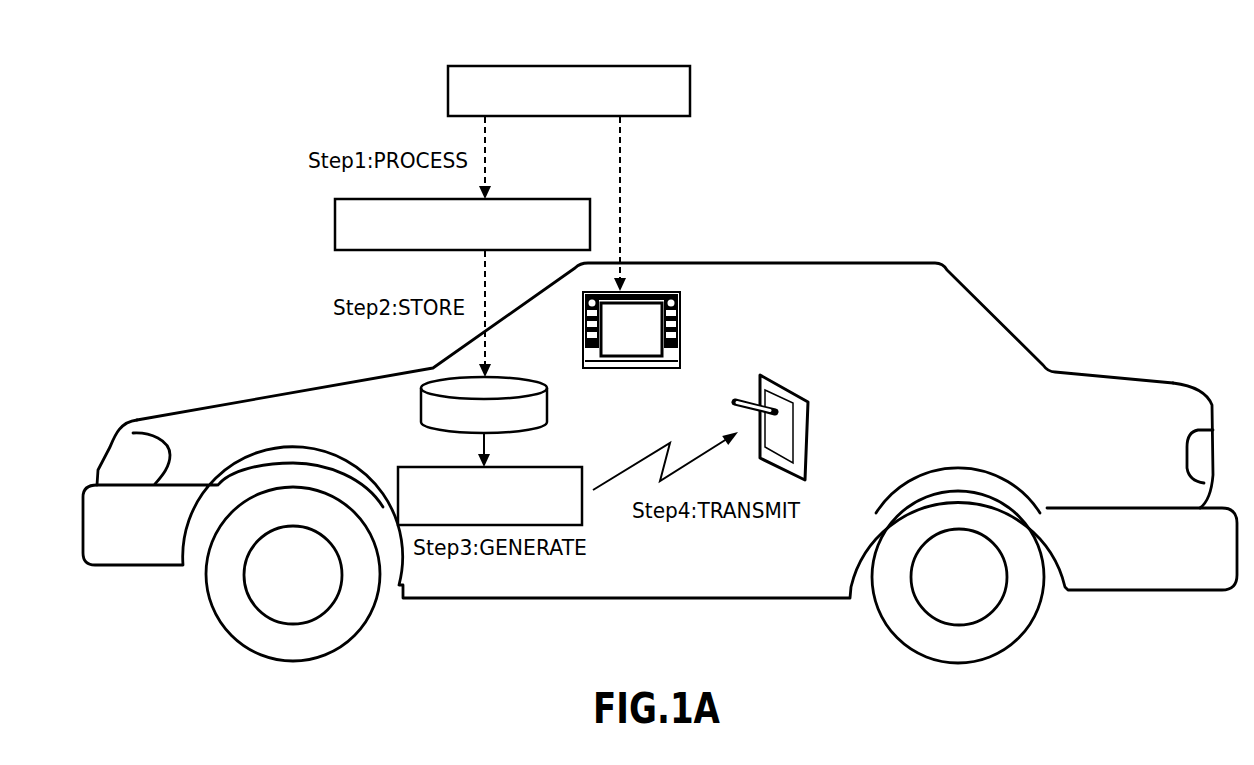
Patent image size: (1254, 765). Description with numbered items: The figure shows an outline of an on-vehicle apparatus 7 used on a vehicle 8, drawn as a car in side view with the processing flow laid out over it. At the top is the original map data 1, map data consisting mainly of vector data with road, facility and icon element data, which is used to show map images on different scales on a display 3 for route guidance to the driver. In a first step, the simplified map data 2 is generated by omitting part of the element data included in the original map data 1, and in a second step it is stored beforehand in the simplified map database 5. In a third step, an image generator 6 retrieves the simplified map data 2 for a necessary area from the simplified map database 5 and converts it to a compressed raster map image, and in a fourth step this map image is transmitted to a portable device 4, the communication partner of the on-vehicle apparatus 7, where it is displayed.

The original map data 1 is at (601, 67).
The simplified map data 2 is at (532, 199).
The display 3 is at (681, 346).
The portable device 4 is at (810, 411).
The simplified map database 5 is at (512, 378).
The image generator 6 is at (550, 467).
The on-vehicle apparatus 7 is at (385, 398).
The vehicle 8 is at (1127, 390).